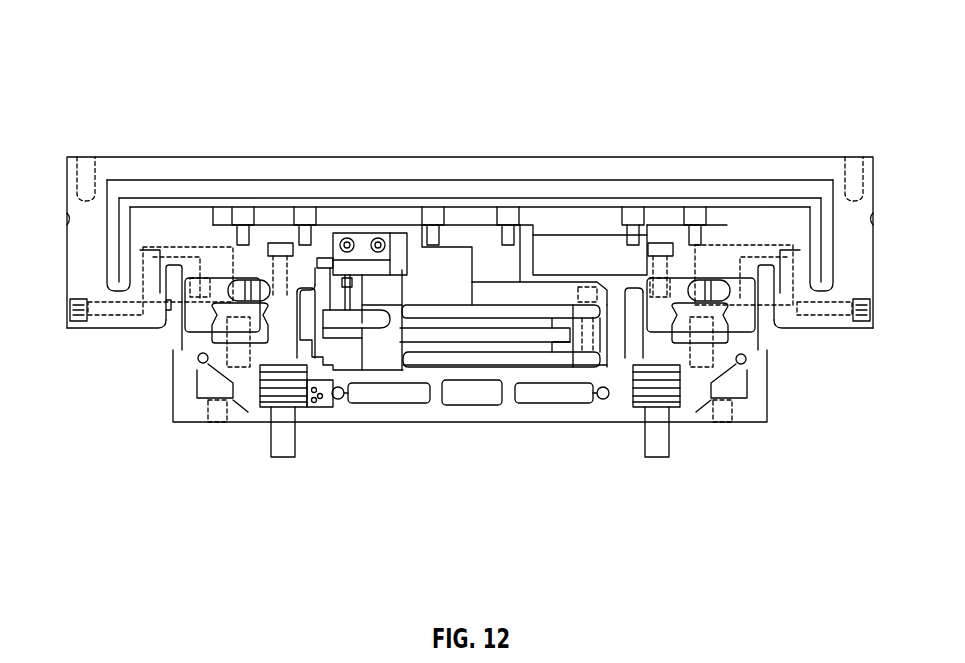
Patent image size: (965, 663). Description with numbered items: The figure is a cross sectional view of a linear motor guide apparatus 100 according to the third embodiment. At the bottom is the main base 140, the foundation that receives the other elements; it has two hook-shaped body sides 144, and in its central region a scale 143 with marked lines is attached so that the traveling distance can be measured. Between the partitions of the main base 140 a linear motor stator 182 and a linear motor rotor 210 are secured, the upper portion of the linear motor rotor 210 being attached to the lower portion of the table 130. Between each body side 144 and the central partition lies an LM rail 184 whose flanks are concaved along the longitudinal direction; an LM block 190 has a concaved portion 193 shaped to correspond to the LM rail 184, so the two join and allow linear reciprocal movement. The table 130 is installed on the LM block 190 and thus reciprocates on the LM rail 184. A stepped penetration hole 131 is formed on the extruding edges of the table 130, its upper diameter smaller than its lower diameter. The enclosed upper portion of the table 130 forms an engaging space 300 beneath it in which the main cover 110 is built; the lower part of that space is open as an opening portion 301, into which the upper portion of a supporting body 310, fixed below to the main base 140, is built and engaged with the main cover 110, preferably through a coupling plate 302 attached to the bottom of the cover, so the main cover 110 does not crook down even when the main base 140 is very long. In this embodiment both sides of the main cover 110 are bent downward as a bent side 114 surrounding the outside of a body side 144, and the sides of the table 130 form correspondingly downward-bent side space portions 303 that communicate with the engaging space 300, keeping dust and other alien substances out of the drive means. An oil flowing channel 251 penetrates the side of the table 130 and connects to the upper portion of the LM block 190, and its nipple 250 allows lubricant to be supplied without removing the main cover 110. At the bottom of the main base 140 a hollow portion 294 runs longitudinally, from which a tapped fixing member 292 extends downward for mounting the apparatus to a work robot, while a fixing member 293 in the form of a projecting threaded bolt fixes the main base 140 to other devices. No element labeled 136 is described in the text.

The linear motor guide apparatus 100 is at (210, 92).
The main cover 110 is at (350, 207).
The bent side 114 is at (117, 249).
The table 130 is at (455, 157).
The stepped penetration hole 131 is at (85, 157).
The guide member 136 is at (215, 303).
The main base 140 is at (625, 424).
The scale 143 is at (315, 307).
The body side 144 is at (175, 352).
The linear motor stator 182 is at (517, 352).
The LM rail 184 is at (215, 385).
The LM block 190 is at (200, 345).
The concaved portion 193 is at (232, 298).
The linear motor rotor 210 is at (447, 338).
The nipple 250 is at (65, 320).
The oil flowing channel 251 is at (110, 318).
The fixing member 292 is at (215, 425).
The fixing member 293 is at (290, 455).
The hollow portion 294 is at (248, 420).
The engaging space 300 is at (582, 188).
The opening portion 301 is at (540, 245).
The coupling plate 302 is at (547, 215).
The side space portion 303 is at (113, 223).
The supporting body 310 is at (467, 233).